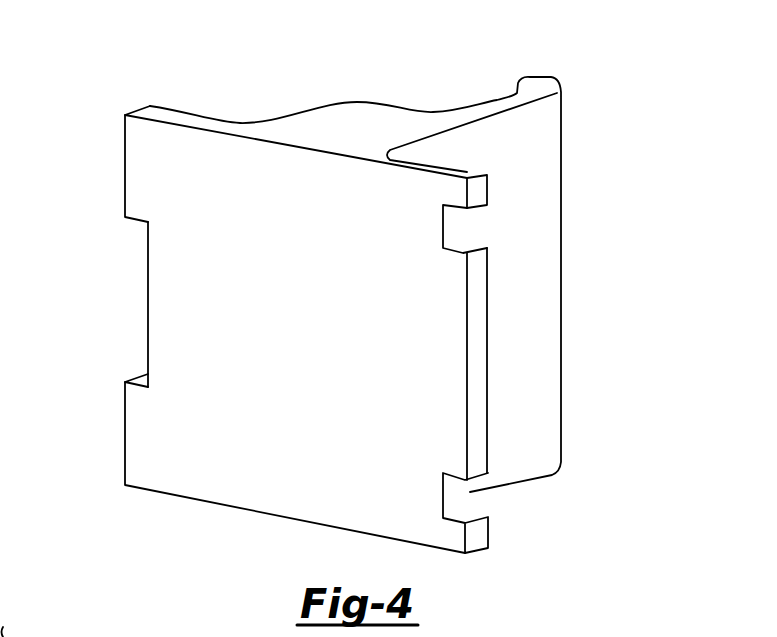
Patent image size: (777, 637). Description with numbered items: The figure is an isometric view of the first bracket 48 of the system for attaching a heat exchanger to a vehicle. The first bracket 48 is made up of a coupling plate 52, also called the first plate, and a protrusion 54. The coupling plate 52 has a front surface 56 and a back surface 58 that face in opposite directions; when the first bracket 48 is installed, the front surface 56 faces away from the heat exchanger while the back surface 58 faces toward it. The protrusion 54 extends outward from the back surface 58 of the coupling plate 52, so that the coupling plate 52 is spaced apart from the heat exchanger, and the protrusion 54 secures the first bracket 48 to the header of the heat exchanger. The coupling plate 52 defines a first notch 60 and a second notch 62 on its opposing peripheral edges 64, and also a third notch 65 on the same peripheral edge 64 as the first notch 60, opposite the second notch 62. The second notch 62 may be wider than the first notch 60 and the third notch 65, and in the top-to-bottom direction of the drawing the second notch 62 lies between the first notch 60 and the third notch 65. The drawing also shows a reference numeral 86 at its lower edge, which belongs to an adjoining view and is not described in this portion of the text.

The first bracket 48 is at (255, 58).
The coupling plate 52 is at (144, 106).
The protrusion 54 is at (370, 112).
The front surface 56 is at (200, 184).
The back surface 58 is at (487, 335).
The first notch 60 is at (452, 225).
The second notch 62 is at (148, 352).
The opposing peripheral edges 64 is at (125, 432).
The third notch 65 is at (453, 502).
The adjacent component 86 is at (20, 636).